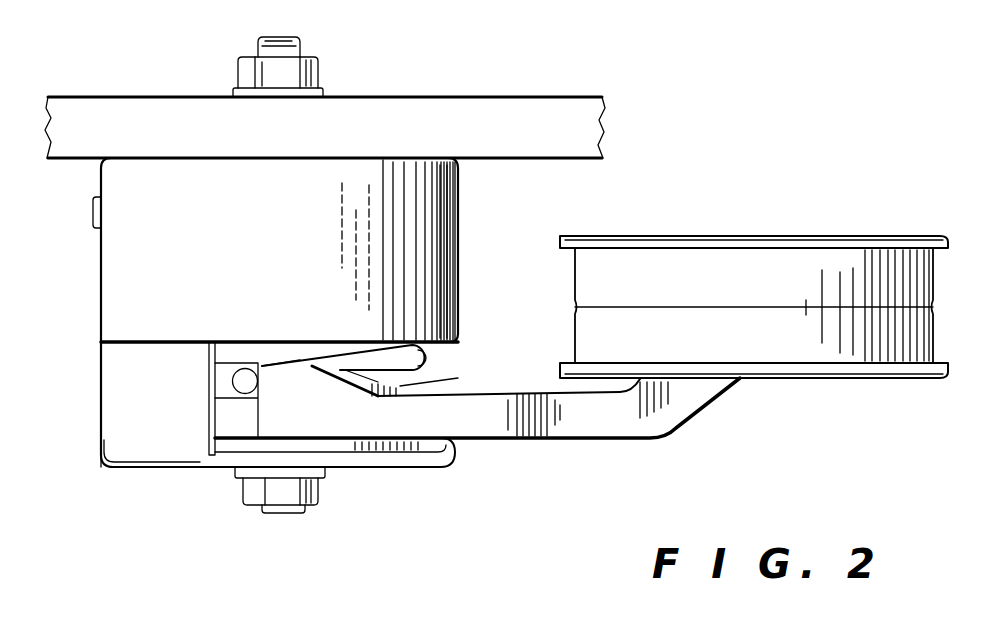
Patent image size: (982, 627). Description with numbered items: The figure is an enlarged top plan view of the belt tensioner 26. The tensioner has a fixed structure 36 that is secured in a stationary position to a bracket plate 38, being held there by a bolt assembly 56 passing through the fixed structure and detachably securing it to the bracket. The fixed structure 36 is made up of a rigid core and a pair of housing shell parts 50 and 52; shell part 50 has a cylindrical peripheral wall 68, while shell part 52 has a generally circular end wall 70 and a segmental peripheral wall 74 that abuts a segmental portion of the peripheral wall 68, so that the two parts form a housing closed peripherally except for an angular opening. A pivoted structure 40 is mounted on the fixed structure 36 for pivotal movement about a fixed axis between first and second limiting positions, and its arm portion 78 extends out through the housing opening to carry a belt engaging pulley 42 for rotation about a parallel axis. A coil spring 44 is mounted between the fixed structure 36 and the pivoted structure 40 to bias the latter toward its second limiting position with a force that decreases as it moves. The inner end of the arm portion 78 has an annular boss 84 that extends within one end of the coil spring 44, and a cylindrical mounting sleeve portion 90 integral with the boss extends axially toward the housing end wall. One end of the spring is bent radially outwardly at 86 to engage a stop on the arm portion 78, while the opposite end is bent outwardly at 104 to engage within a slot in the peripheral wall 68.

The belt tensioner 26 is at (147, 475).
The fixed structure 36 is at (462, 209).
The bracket plate 38 is at (465, 116).
The pivoted structure 40 is at (533, 440).
The belt engaging pulley 42 is at (622, 235).
The coil spring 44 is at (428, 358).
The housing shell part 50 is at (115, 288).
The housing shell part 52 is at (115, 403).
The bolt assembly 56 is at (318, 64).
The cylindrical peripheral wall 68 is at (461, 277).
The circular end wall 70 is at (380, 457).
The segmental peripheral wall 74 is at (104, 441).
The arm portion 78 is at (593, 424).
The annular boss 84 is at (430, 385).
The radially outwardly bent spring end 86 is at (231, 378).
The cylindrical mounting sleeve portion 90 is at (300, 303).
The radially outwardly bent spring end 104 is at (93, 214).